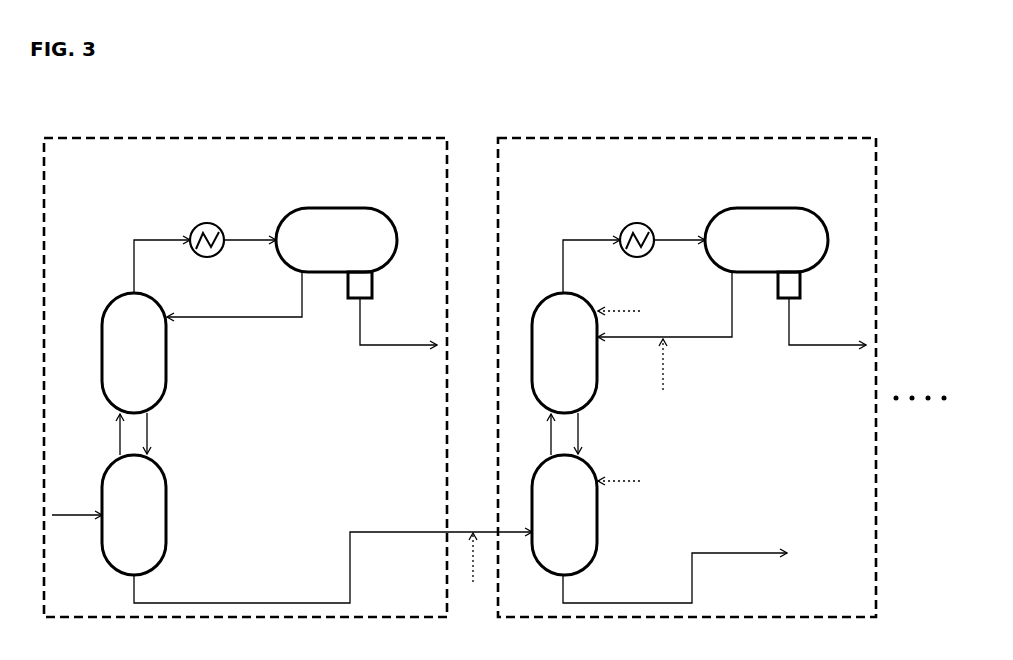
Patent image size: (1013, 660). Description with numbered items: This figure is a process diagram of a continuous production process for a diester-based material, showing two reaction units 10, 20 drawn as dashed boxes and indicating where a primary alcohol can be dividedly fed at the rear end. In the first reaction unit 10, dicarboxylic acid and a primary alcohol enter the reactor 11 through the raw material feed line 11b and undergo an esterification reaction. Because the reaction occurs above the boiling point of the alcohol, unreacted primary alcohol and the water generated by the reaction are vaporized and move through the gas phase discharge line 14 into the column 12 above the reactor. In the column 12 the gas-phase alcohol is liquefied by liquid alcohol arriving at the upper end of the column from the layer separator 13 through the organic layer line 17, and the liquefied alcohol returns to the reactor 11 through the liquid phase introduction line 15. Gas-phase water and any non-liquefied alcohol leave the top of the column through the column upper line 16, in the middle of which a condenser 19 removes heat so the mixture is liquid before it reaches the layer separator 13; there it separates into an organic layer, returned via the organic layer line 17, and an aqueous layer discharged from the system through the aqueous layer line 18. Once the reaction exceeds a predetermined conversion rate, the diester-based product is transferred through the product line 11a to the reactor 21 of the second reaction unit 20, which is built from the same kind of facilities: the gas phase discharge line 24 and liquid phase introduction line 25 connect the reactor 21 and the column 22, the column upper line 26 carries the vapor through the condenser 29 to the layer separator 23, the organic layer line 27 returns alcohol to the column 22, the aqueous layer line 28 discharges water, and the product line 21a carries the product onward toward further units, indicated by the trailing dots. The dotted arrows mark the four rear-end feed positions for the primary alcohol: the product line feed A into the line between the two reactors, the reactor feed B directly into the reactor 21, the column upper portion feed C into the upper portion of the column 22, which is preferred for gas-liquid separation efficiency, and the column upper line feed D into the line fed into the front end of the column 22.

The reaction unit 10 is at (89, 121).
The reaction unit 20 is at (518, 121).
The reactor 11 is at (134, 515).
The column 12 is at (134, 353).
The layer separator 13 is at (336, 253).
The gas phase discharge line 14 is at (107, 434).
The liquid phase introduction line 15 is at (162, 433).
The column upper line 16 is at (191, 255).
The organic layer line 17 is at (234, 306).
The aqueous layer line 18 is at (398, 321).
The condenser 19 is at (207, 231).
The product line 11a is at (333, 567).
The raw material feed line 11b is at (77, 502).
The reactor 21 is at (564, 515).
The column 22 is at (564, 353).
The layer separator 23 is at (766, 253).
The gas phase discharge line 24 is at (538, 434).
The liquid phase introduction line 25 is at (593, 433).
The column upper line 26 is at (621, 255).
The organic layer line 27 is at (665, 304).
The aqueous layer line 28 is at (827, 321).
The condenser 29 is at (637, 231).
The product line 21a is at (675, 578).
The product line feed A is at (473, 567).
The reactor feed B is at (627, 482).
The column upper portion feed C is at (627, 312).
The column upper line feed D is at (663, 372).